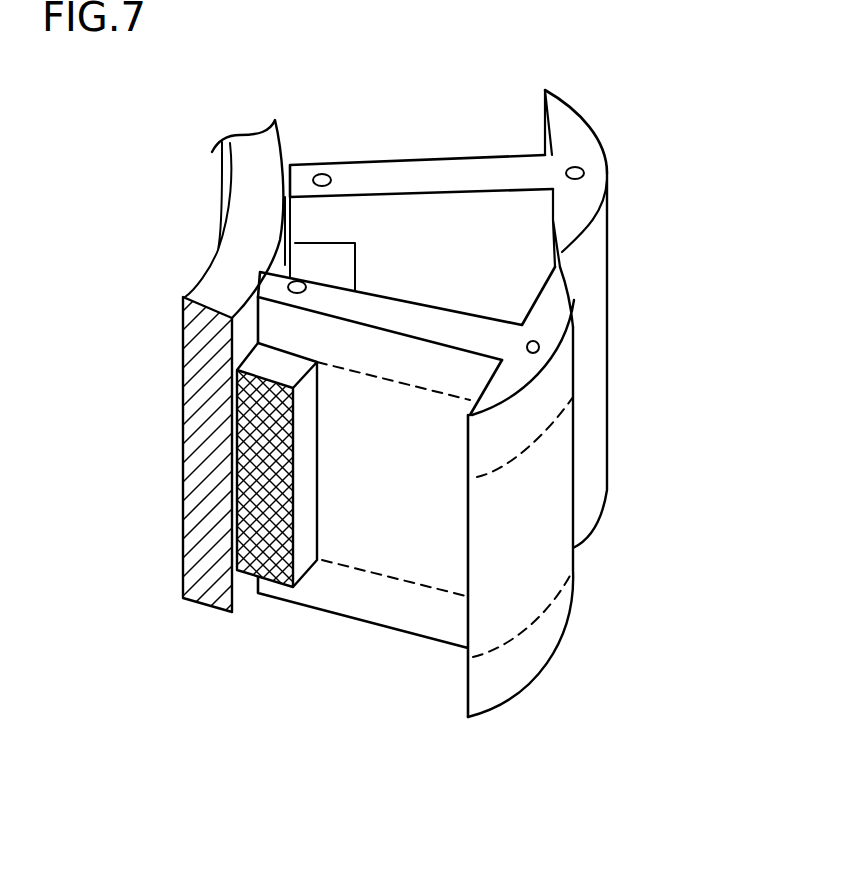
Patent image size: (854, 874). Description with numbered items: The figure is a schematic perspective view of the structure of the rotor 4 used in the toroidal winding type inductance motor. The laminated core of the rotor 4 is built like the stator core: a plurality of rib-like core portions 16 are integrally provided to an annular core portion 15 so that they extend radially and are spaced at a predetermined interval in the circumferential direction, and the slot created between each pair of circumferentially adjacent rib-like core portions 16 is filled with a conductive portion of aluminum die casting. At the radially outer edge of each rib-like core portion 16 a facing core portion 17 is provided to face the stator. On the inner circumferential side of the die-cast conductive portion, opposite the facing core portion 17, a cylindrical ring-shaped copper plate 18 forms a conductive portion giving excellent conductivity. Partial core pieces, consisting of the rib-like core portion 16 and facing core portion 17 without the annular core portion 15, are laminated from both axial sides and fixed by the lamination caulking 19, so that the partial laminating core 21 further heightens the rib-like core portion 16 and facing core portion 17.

The rotor 4 is at (378, 140).
The annular core portion 15 is at (280, 570).
The rib-like core portion 16 is at (420, 558).
The facing core portion 17 is at (537, 547).
The cylindrical ring-shaped copper plate 18 is at (257, 190).
The lamination caulking 19 is at (539, 341).
The partial laminating core 21 is at (532, 415).